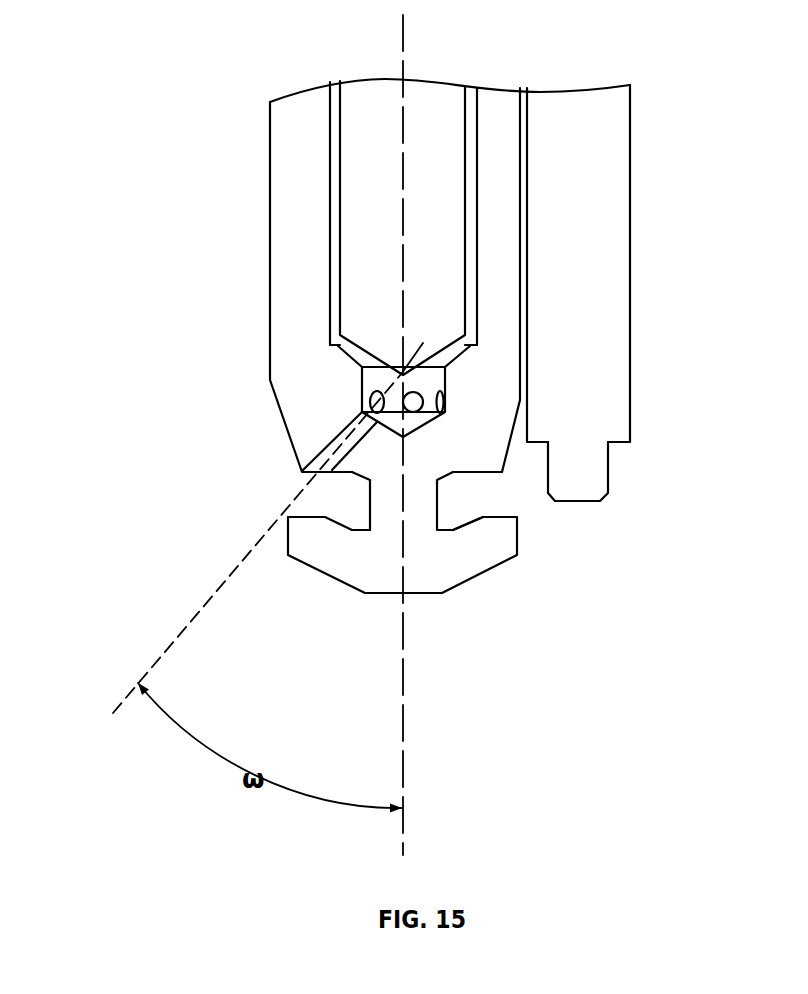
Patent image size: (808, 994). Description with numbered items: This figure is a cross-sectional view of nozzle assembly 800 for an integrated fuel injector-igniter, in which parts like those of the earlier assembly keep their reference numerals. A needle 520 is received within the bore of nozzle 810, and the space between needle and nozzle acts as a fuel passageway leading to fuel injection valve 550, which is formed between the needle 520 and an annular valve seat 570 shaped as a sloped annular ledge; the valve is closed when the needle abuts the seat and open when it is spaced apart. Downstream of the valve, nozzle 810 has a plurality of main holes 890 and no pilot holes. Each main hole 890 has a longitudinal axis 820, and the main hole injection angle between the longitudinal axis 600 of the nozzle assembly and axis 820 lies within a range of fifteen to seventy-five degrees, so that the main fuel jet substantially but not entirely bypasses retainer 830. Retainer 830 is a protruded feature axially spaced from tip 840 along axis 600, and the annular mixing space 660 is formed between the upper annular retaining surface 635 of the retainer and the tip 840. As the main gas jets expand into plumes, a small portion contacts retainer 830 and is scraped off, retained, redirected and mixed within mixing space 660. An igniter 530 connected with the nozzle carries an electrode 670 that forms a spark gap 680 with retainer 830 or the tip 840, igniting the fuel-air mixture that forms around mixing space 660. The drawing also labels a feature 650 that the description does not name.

The nozzle assembly 800 is at (200, 105).
The nozzle 810 is at (270, 185).
The needle 520 is at (362, 103).
The igniter 530 is at (630, 345).
The fuel injection valve 550 is at (487, 337).
The annular valve seat 570 is at (343, 359).
The main hole 890 is at (340, 427).
The annular mixing space 660 is at (327, 492).
The notch 650 is at (378, 503).
The electrode 670 is at (598, 490).
The spark gap 680 is at (537, 510).
The longitudinal axis of main hole 820 is at (180, 632).
The retainer 830 is at (288, 547).
The longitudinal axis of nozzle 600 is at (402, 632).
The tip 840 is at (487, 473).
The annular retaining surface 635 is at (465, 525).